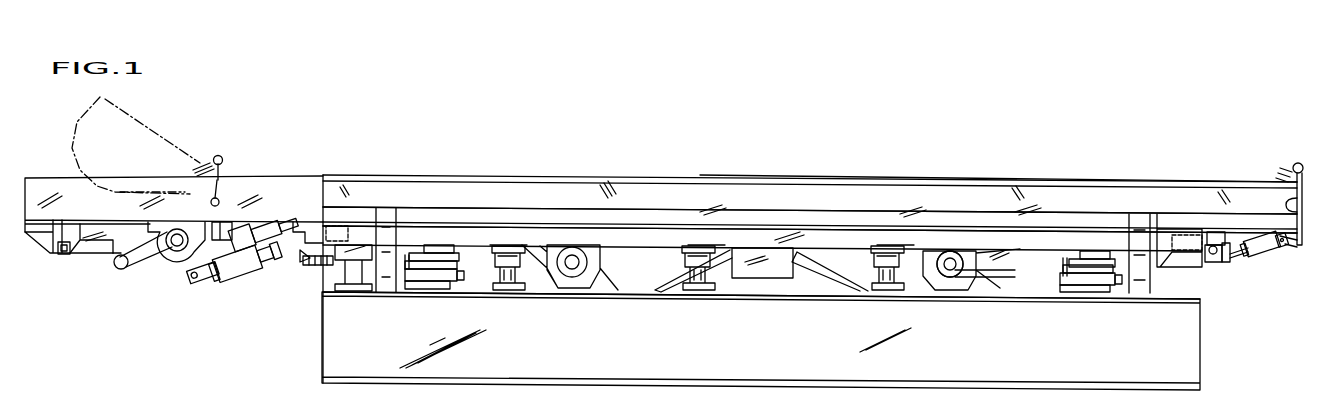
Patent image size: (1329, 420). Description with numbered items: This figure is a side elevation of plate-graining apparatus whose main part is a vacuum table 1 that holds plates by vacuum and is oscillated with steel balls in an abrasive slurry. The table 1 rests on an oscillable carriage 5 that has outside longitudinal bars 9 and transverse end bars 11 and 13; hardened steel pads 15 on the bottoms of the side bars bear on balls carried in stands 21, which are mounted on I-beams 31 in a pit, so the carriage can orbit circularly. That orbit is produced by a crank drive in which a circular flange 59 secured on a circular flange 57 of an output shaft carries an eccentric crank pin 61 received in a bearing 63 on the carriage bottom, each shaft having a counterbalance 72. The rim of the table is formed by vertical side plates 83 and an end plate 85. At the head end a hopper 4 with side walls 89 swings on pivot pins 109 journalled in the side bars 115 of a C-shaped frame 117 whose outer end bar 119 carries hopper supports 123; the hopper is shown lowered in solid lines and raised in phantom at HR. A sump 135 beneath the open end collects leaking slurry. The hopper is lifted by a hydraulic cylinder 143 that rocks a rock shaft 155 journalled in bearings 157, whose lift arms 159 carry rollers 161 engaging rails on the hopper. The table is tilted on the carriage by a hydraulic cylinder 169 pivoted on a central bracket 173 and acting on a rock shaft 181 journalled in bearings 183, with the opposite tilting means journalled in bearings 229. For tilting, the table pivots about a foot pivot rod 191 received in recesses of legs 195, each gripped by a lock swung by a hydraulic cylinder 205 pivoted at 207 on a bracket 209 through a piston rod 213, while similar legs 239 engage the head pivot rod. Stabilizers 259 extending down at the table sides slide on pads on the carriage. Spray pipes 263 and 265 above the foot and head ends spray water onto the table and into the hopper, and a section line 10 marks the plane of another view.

The vacuum table 1 is at (462, 170).
The hopper 4 is at (75, 265).
The carriage 5 is at (629, 251).
The outside longitudinal bars 9 is at (830, 238).
The section line 10 is at (287, 337).
The end bar 11 is at (352, 228).
The end bar 13 is at (1157, 230).
The hardened steel pads 15 is at (507, 243).
The stand 21 is at (357, 287).
The I-beams 31 is at (322, 380).
The circular flange 57 is at (460, 263).
The circular flange 59 is at (407, 256).
The crank pin 61 is at (450, 257).
The bearing 63 is at (440, 240).
The counterbalance 72 is at (313, 287).
The vertical plates 83 is at (1045, 195).
The vertical plate 85 is at (1312, 195).
The side walls 89 is at (110, 230).
The pivot pins 109 is at (219, 198).
The side bars 115 is at (147, 187).
The C-shaped frame 117 is at (50, 170).
The end bar 119 is at (22, 213).
The hopper supports 123 is at (50, 257).
The sump 135 is at (240, 233).
The hydraulic cylinder 143 is at (233, 278).
The rock shaft 155 is at (176, 247).
The bearings 157 is at (192, 227).
The lift arms 159 is at (137, 267).
The rollers 161 is at (117, 264).
The hydraulic cylinder 169 is at (820, 280).
The bracket 173 is at (763, 280).
The rock shaft 181 is at (950, 262).
The bearings 183 is at (957, 287).
The table foot pivot rod 191 is at (1213, 263).
The legs 195 is at (1220, 240).
The hydraulic cylinder 205 is at (1266, 247).
The pivot 207 is at (1280, 240).
The bracket 209 is at (1277, 235).
The piston rod 213 is at (1240, 257).
The bearings 229 is at (560, 275).
The legs 239 is at (293, 228).
The stabilizers 259 is at (383, 277).
The spray pipe 263 is at (1298, 163).
The spray pipe 265 is at (237, 130).
The raised hopper position HR is at (128, 102).